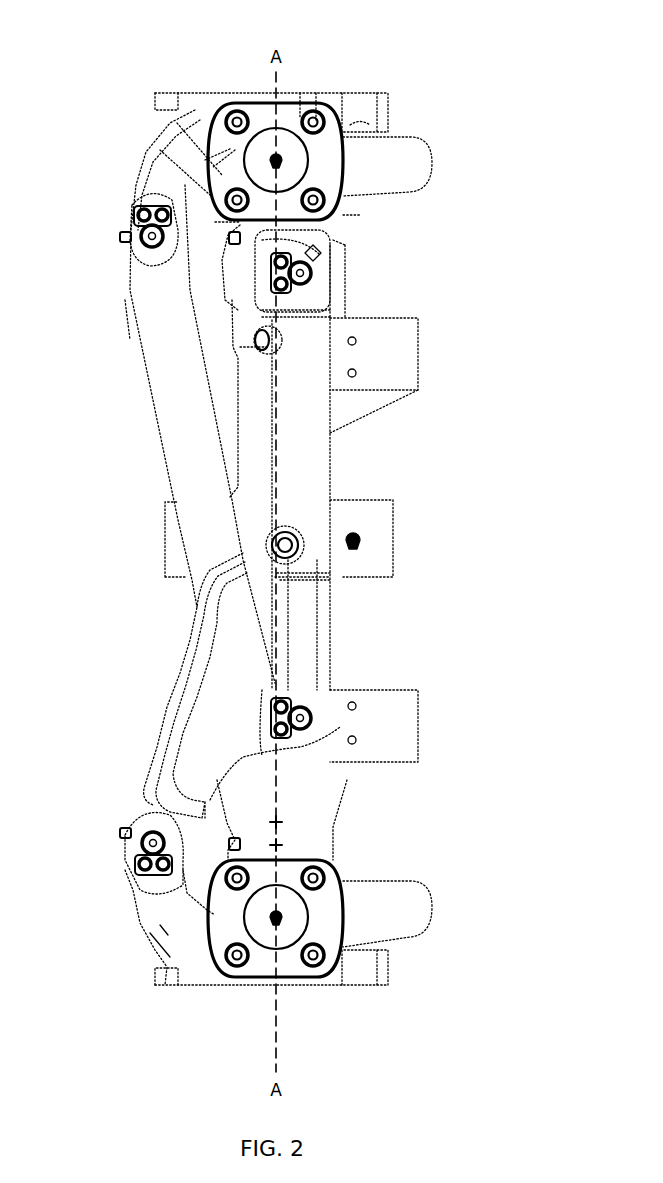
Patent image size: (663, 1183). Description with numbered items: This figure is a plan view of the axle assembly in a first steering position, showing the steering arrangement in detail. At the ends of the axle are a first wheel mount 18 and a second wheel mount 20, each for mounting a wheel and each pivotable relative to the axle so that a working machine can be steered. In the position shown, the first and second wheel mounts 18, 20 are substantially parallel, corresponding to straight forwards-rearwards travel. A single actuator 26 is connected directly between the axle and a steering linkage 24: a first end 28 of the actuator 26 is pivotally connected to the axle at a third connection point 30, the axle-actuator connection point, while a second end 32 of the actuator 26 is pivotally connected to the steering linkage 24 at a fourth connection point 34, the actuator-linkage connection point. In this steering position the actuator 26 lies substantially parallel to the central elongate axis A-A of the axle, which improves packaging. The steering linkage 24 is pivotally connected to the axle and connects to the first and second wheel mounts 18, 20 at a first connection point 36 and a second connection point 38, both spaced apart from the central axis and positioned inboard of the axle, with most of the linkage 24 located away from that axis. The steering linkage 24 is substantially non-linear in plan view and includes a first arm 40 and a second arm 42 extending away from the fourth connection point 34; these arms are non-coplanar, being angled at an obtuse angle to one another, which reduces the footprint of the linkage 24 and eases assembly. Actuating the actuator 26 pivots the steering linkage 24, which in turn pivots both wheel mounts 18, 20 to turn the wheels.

The first wheel mount 18 is at (203, 973).
The second wheel mount 20 is at (195, 113).
The steering linkage 24 is at (183, 468).
The actuator 26 is at (307, 433).
The first end of the actuator 28 is at (287, 240).
The third connection point 30 is at (314, 278).
The second end of the actuator 32 is at (307, 748).
The fourth connection point 34 is at (300, 719).
The first connection point 36 is at (143, 830).
The second connection point 38 is at (143, 235).
The first arm 40 is at (177, 758).
The second arm 42 is at (167, 347).